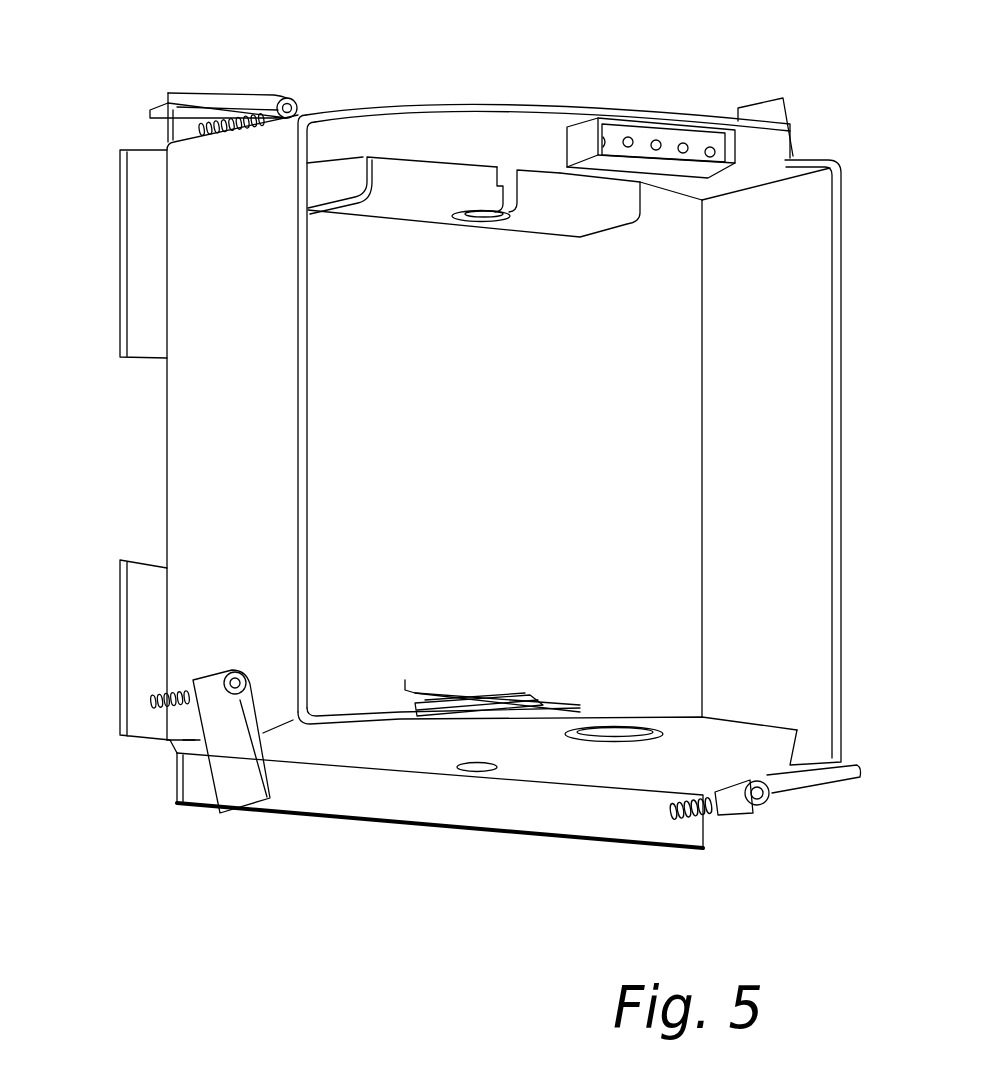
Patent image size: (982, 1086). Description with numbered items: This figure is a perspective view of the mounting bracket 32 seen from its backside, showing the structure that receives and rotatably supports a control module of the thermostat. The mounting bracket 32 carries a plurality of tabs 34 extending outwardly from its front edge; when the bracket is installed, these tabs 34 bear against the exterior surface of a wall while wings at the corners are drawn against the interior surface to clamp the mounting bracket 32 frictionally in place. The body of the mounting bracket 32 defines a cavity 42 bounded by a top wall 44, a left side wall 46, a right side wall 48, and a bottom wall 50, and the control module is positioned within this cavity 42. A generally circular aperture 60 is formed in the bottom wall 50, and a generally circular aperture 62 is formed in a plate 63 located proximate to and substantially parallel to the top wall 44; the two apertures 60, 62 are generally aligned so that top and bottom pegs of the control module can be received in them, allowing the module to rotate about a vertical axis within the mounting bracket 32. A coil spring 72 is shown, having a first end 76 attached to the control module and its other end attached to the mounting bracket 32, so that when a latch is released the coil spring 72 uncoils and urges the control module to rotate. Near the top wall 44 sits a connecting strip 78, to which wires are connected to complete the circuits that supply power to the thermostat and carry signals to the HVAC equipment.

The mounting bracket 32 is at (136, 518).
The tabs 34 is at (203, 90).
The cavity 42 is at (508, 351).
The top wall 44 is at (535, 130).
The left side wall 46 is at (758, 327).
The right side wall 48 is at (195, 441).
The bottom wall 50 is at (617, 767).
The aperture 60 is at (577, 740).
The aperture 62 is at (470, 212).
The plate 63 is at (381, 174).
The coil spring 72 is at (460, 697).
The first end 76 is at (407, 687).
The connecting strip 78 is at (683, 143).